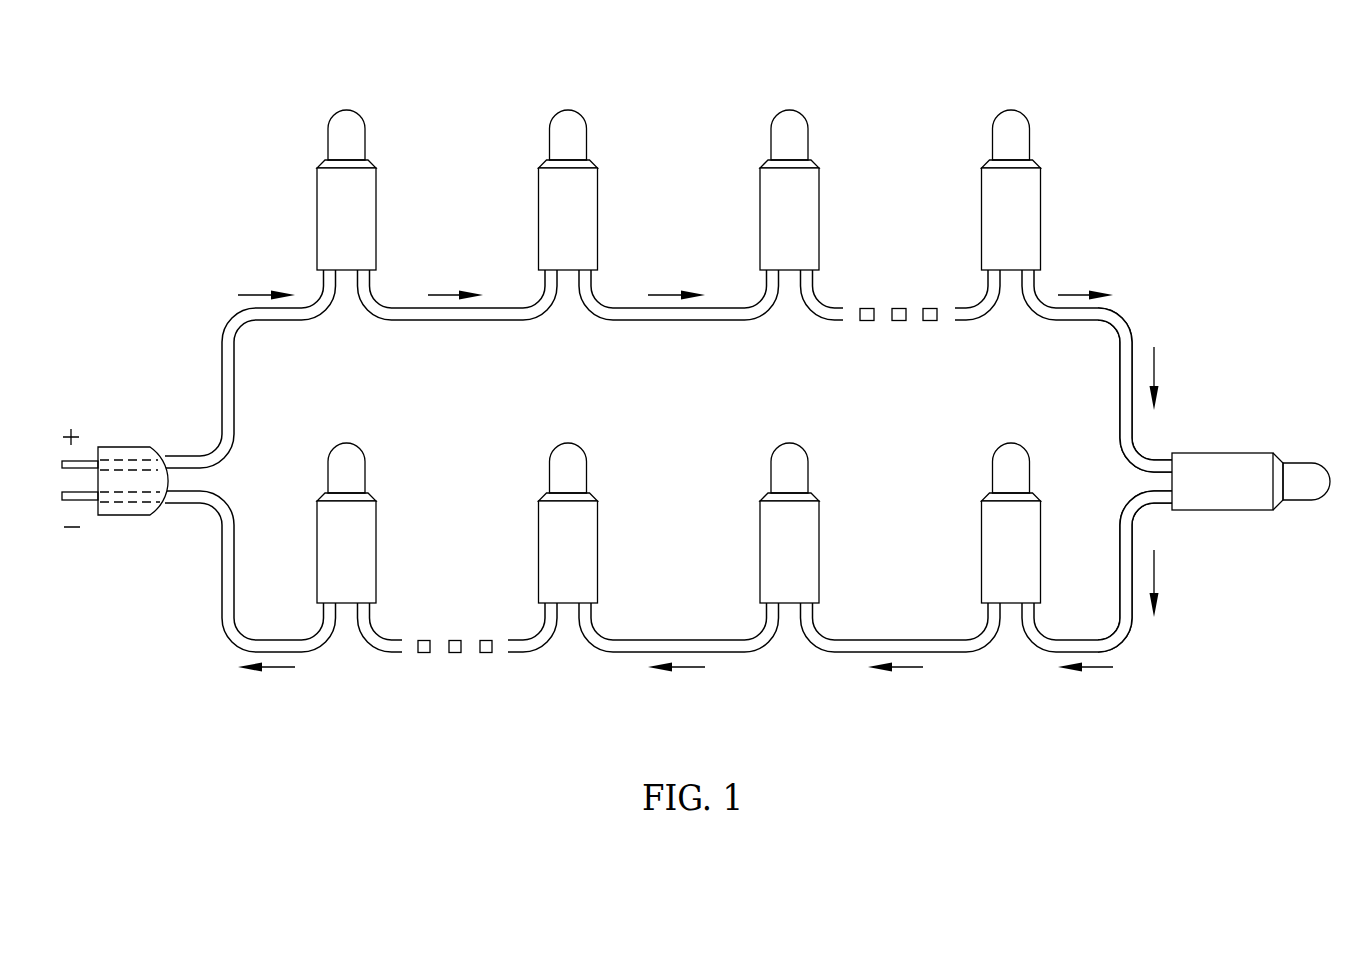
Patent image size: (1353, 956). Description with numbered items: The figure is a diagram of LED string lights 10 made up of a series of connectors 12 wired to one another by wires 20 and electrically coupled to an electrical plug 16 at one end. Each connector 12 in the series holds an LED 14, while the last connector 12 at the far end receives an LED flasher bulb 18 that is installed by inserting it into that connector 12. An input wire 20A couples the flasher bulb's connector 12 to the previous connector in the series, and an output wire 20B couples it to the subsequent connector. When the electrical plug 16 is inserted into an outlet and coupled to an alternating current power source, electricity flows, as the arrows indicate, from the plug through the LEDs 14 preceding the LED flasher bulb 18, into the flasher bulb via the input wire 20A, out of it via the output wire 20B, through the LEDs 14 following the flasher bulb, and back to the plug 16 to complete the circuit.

The LED string lights 10 is at (1172, 69).
The connector 12 is at (368, 193).
The LED 14 is at (354, 132).
The electrical plug 16 is at (131, 448).
The LED flasher bulb 18 is at (1277, 460).
The wires 20 is at (223, 355).
The input wire 20A is at (1133, 343).
The output wire 20B is at (1128, 633).